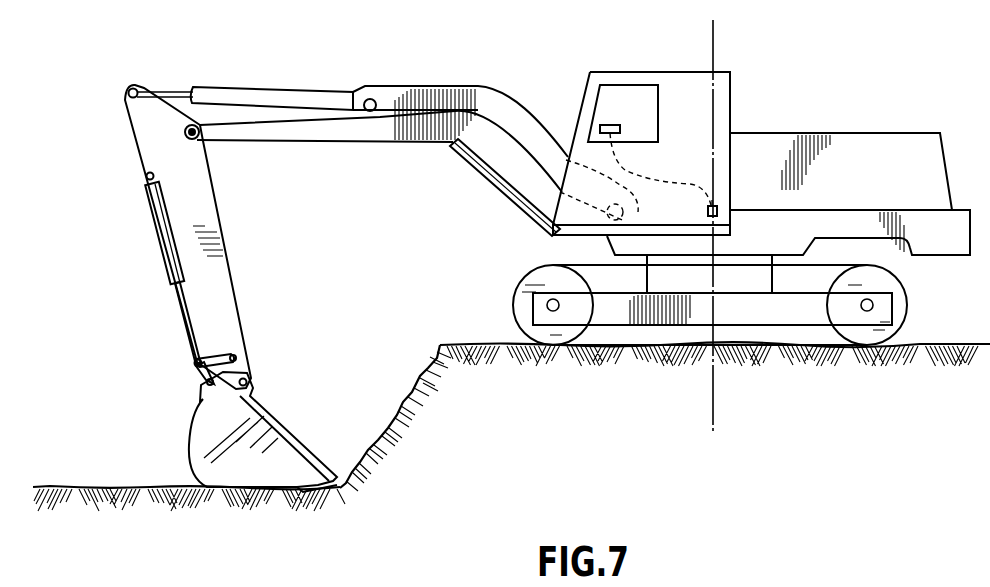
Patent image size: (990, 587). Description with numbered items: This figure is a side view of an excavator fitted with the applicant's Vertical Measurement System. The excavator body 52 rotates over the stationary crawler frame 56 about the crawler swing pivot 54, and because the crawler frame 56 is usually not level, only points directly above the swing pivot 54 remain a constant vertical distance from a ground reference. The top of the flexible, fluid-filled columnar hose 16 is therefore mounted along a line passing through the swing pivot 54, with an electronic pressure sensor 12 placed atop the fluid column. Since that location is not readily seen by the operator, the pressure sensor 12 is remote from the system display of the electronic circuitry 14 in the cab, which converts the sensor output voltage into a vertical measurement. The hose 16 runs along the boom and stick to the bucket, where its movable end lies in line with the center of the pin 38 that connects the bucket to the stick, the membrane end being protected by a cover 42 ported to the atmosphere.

The electronic pressure sensor 12 is at (717, 208).
The electronic circuitry 14 is at (608, 124).
The columnar hose 16 is at (208, 327).
The pin 38 is at (203, 400).
The cover 42 is at (252, 382).
The excavator body 52 is at (767, 133).
The crawler swing pivot 54 is at (713, 432).
The crawler frame 56 is at (691, 313).